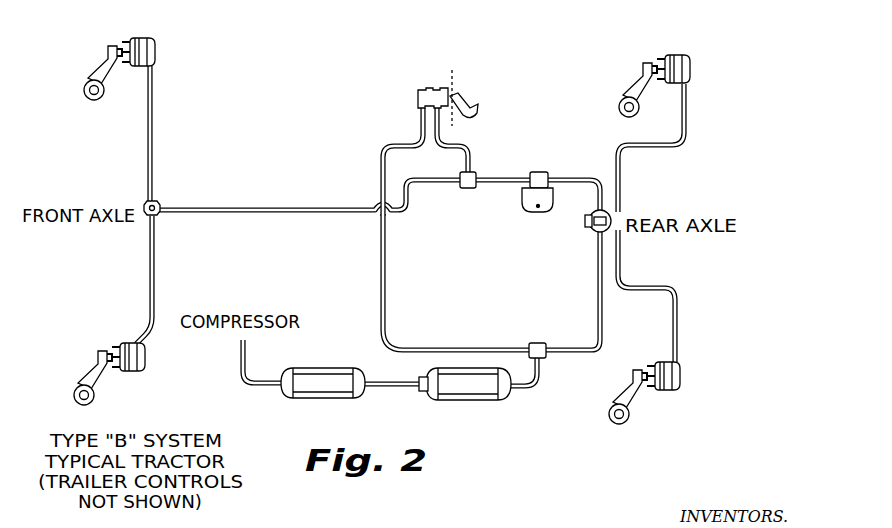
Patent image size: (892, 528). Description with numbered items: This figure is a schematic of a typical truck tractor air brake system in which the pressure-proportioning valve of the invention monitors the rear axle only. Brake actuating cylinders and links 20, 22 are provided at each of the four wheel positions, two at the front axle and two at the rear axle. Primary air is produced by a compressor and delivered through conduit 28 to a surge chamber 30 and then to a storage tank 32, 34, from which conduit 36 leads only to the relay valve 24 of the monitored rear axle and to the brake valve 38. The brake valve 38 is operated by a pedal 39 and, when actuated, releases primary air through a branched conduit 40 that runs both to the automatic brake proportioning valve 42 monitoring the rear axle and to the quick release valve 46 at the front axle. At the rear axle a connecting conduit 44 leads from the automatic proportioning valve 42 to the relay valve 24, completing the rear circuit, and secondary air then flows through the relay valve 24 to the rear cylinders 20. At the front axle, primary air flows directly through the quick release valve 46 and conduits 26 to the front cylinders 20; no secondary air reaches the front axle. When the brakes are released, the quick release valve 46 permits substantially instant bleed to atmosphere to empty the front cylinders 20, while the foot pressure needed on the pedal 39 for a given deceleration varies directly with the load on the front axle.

The brake actuating cylinder 20 is at (153, 42).
The link 22 is at (89, 80).
The relay valve 24 is at (612, 216).
The conduit 26 is at (154, 111).
The conduit 28 is at (264, 376).
The surge chamber 30 is at (338, 370).
The storage tank 32 is at (476, 373).
The storage tank 34 is at (417, 397).
The conduit 36 is at (485, 347).
The brake valve 38 is at (431, 80).
The pedal 39 is at (462, 107).
The branched conduit 40 is at (314, 207).
The automatic brake proportioning valve 42 is at (518, 214).
The connecting conduit 44 is at (569, 178).
The quick release valve 46 is at (142, 194).